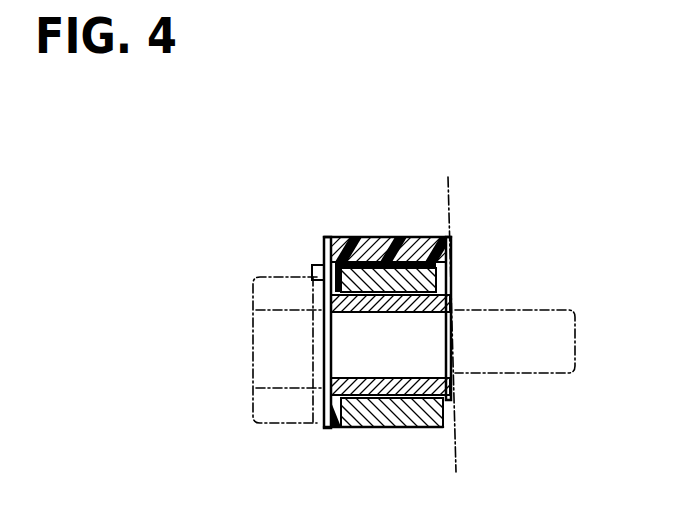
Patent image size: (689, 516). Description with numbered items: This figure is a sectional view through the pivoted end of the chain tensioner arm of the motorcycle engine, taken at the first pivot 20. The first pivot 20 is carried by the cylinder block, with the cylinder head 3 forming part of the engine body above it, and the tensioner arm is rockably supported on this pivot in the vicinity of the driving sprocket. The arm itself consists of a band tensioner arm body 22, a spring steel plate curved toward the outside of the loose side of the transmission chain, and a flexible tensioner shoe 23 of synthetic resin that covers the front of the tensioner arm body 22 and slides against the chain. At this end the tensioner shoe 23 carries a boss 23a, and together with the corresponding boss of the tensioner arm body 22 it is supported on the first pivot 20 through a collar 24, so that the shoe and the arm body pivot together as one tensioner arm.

The cylinder head 3 is at (447, 193).
The first pivot 20 is at (262, 336).
The tensioner arm body 22 is at (410, 262).
The tensioner shoe 23 is at (353, 237).
The boss 23a is at (313, 270).
The collar 24 is at (448, 300).